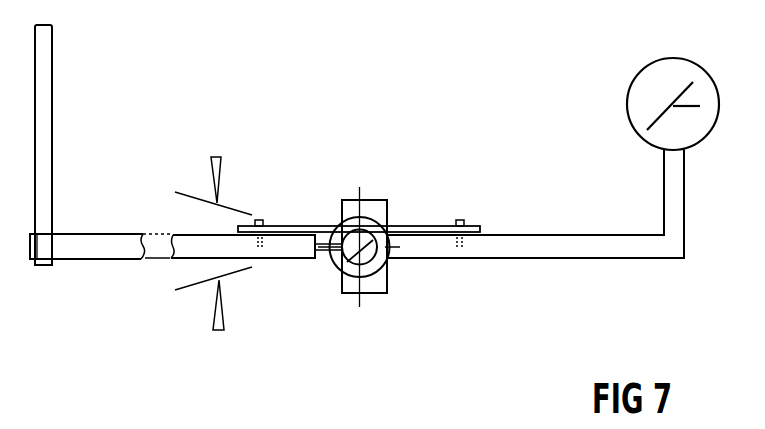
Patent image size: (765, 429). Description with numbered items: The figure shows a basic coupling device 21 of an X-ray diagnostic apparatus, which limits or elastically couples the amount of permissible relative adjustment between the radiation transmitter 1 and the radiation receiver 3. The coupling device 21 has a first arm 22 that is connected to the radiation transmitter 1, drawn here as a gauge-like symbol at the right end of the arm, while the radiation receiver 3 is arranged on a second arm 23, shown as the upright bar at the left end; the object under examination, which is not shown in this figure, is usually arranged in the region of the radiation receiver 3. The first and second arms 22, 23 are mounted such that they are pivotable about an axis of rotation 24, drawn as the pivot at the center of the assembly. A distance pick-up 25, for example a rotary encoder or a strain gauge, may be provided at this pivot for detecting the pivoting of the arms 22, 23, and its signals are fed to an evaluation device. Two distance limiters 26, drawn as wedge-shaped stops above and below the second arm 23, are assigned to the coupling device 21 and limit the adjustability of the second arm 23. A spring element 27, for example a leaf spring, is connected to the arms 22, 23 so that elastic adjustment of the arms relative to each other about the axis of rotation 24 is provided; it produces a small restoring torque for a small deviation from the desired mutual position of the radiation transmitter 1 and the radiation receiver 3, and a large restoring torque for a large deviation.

The radiation transmitter 1 is at (627, 103).
The radiation receiver 3 is at (53, 190).
The coupling device 21 is at (311, 142).
The first arm 22 is at (508, 250).
The second arm 23 is at (85, 253).
The axis of rotation 24 is at (340, 263).
The distance pick-up 25 is at (368, 200).
The distance limiters 26 is at (222, 177).
The spring element 27 is at (423, 225).